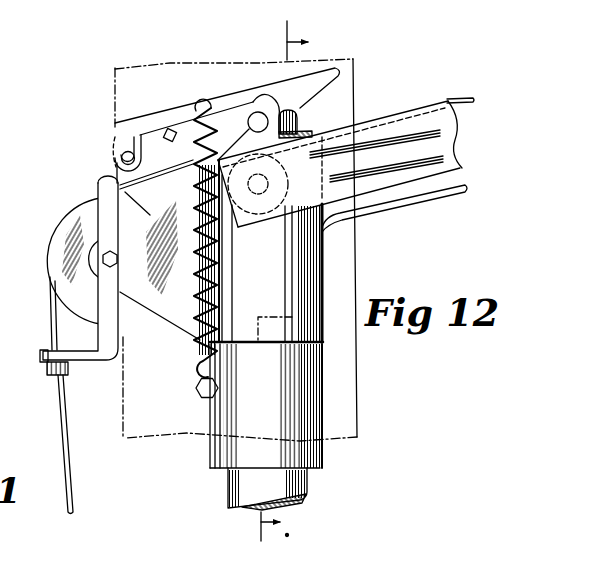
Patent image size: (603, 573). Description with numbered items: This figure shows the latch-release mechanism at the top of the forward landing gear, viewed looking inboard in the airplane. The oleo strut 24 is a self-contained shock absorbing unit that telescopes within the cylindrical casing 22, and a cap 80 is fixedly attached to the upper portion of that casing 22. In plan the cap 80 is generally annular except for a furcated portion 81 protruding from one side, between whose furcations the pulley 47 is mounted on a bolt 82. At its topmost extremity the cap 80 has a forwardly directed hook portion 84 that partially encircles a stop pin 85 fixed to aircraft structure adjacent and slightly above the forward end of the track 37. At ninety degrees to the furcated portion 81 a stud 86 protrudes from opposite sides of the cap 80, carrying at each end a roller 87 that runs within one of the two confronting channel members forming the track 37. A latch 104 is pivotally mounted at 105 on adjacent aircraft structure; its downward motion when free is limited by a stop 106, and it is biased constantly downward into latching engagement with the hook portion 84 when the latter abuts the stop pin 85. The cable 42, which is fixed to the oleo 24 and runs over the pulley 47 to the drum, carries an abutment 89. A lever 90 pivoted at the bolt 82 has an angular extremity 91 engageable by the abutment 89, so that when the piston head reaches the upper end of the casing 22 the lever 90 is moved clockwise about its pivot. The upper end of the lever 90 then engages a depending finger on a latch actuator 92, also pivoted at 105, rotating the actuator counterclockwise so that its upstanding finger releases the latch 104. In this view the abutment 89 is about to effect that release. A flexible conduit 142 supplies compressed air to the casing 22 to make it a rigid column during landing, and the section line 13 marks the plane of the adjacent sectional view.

The section line 13- 13 is at (271, 282).
The cylindrical casing 22 is at (322, 452).
The oleo strut 24 is at (310, 487).
The track 37 is at (407, 110).
The cable 42 is at (60, 423).
The pulley 47 is at (97, 313).
The cap 80 is at (323, 337).
The furcated portion 81 is at (175, 322).
The bolt 82 is at (115, 261).
The hook portion 84 is at (266, 105).
The stop pin 85 is at (248, 126).
The stud 86 is at (268, 180).
The roller 87 is at (283, 197).
The abutment 89 is at (45, 375).
The lever 90 is at (107, 295).
The angular extremity 91 is at (40, 358).
The latch actuator 92 is at (113, 173).
The latch 104 is at (233, 91).
The pivot 105 is at (118, 156).
The stop 106 is at (168, 142).
The flexible conduit 142 is at (420, 205).